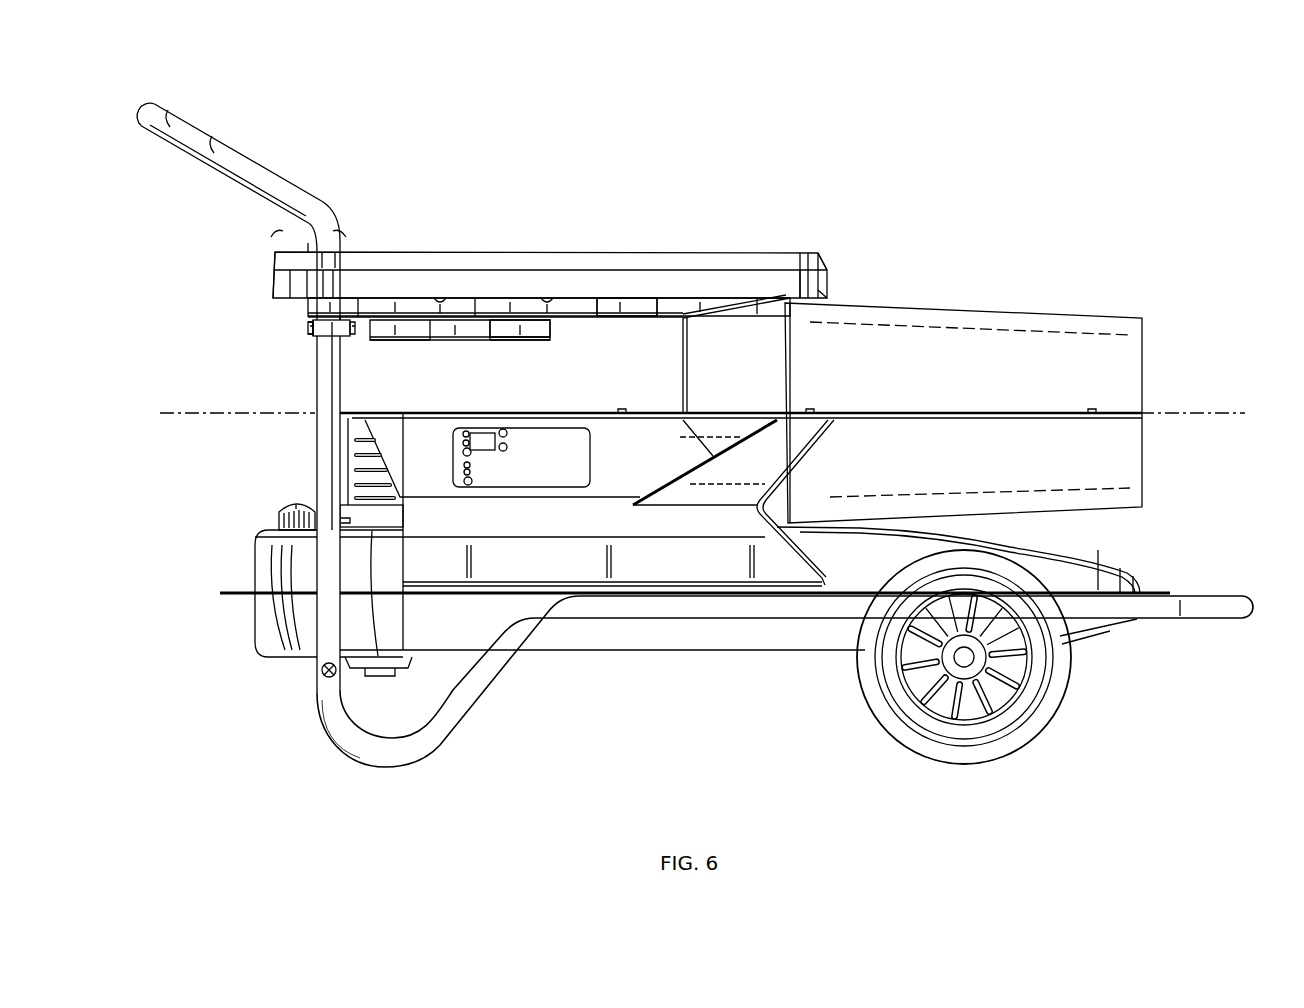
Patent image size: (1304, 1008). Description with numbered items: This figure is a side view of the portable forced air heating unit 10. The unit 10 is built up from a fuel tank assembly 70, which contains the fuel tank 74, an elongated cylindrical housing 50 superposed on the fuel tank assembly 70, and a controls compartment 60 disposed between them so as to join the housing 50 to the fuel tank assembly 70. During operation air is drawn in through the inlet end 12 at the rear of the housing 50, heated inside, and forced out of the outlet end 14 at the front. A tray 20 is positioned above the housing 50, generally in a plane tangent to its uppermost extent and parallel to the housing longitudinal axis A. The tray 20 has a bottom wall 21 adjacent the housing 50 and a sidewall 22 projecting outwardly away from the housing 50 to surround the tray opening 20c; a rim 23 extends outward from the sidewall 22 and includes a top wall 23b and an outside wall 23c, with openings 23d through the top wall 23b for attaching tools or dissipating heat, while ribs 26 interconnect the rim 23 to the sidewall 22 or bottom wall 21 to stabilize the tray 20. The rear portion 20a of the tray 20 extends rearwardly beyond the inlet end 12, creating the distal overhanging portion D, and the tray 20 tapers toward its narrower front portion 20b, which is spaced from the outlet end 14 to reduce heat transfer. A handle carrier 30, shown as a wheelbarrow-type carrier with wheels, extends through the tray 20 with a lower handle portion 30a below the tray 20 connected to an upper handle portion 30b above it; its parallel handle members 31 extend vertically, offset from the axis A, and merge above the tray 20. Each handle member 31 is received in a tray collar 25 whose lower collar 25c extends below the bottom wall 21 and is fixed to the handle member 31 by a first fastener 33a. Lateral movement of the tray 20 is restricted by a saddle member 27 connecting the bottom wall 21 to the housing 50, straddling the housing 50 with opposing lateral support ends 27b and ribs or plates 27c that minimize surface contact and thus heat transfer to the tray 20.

The portable forced air heating unit 10 is at (1036, 126).
The inlet end 12 is at (294, 458).
The outlet end 14 is at (1027, 442).
The tray 20 is at (543, 259).
The rear portion of the tray 20a is at (240, 265).
The front portion of the tray 20b is at (831, 226).
The tray opening 20c is at (500, 242).
The bottom wall 21 is at (693, 320).
The sidewall 22 is at (632, 305).
The rim 23 is at (838, 287).
The top wall 23b is at (796, 252).
The outside wall 23c is at (830, 290).
The openings 23d is at (440, 297).
The tray collar 25 is at (303, 343).
The lower collar 25c is at (333, 340).
The ribs 26 is at (334, 316).
The saddle member 27 is at (445, 347).
The lateral support ends 27b is at (512, 345).
The ribs or plates 27c is at (545, 345).
The handle carrier 30 is at (651, 460).
The lower handle portion 30a is at (305, 737).
The upper handle portion 30b is at (128, 117).
The handle members 31 is at (245, 186).
The first fastener 33a is at (313, 327).
The housing 50 is at (1080, 350).
The controls compartment 60 is at (620, 568).
The fuel tank assembly 70 is at (820, 672).
The tank 74 is at (722, 636).
The longitudinal axis A is at (1228, 412).
The distal overhanging portion D is at (308, 243).